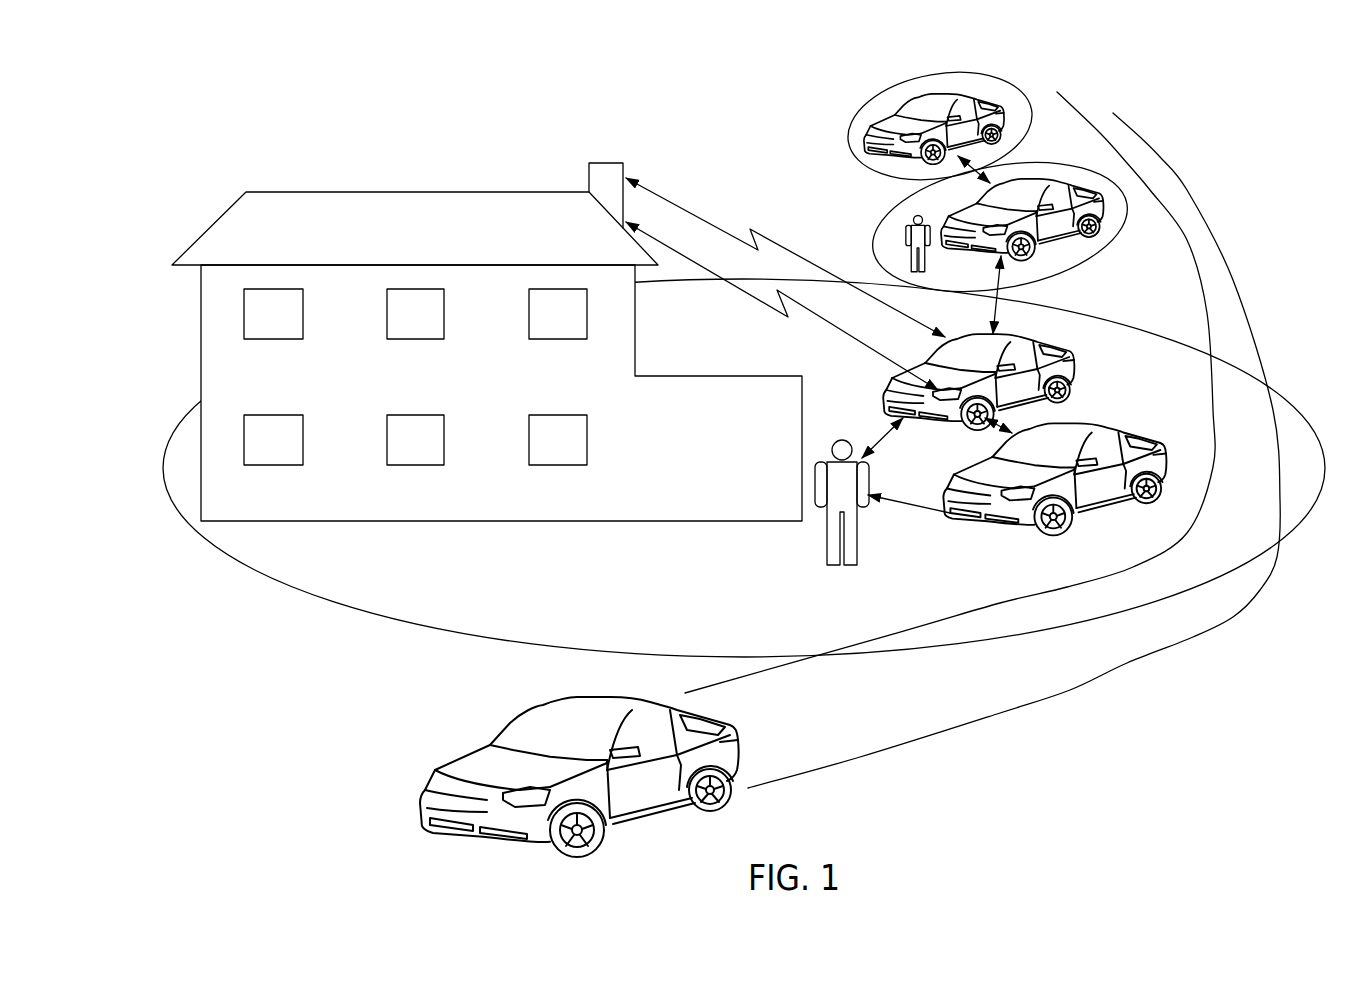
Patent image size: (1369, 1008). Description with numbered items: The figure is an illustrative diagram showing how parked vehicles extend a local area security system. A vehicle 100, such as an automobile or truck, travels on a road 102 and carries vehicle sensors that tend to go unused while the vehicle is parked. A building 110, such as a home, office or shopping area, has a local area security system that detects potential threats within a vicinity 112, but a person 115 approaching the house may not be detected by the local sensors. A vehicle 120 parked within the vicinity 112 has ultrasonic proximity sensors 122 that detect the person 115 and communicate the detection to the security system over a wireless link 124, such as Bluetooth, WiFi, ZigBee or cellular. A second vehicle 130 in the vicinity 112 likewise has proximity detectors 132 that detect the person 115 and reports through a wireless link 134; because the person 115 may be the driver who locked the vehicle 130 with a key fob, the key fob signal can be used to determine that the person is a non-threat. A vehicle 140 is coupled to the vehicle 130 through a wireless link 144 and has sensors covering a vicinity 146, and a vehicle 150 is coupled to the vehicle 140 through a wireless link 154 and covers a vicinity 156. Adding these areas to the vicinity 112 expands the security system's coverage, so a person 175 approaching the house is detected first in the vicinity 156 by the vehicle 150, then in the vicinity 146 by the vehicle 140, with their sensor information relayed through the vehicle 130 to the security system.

The vehicle 100 is at (463, 752).
The road 102 is at (987, 617).
The building 110 is at (386, 190).
The vicinity 112 is at (348, 603).
The person 115 is at (823, 550).
The vehicle 120 is at (1093, 420).
The proximity sensors 122 is at (903, 505).
The wireless link 124 is at (748, 296).
The vehicle 130 is at (1073, 357).
The proximity detectors 132 is at (883, 433).
The wireless link 134 is at (685, 209).
The vehicle 140 is at (1068, 240).
The wireless link 144 is at (1000, 296).
The vicinity 146 is at (1117, 223).
The vehicle 150 is at (893, 100).
The wireless link 154 is at (990, 167).
The vicinity 156 is at (847, 142).
The person 175 is at (905, 237).